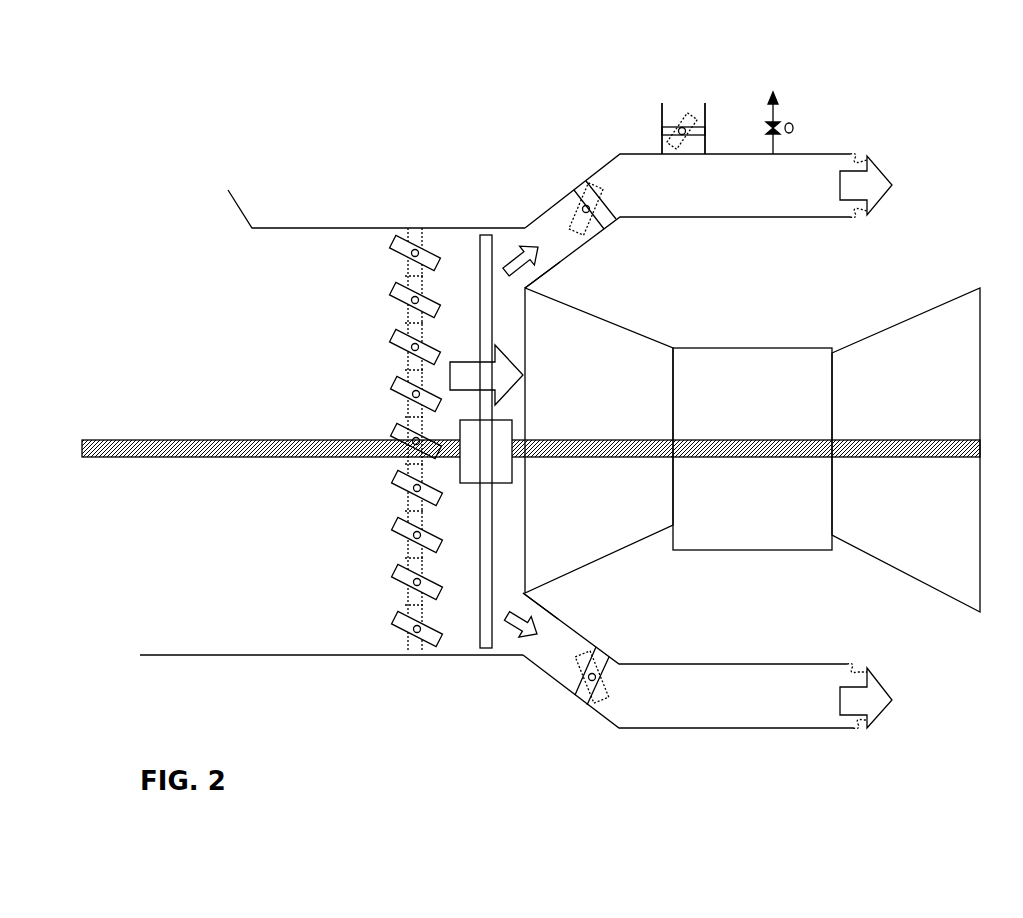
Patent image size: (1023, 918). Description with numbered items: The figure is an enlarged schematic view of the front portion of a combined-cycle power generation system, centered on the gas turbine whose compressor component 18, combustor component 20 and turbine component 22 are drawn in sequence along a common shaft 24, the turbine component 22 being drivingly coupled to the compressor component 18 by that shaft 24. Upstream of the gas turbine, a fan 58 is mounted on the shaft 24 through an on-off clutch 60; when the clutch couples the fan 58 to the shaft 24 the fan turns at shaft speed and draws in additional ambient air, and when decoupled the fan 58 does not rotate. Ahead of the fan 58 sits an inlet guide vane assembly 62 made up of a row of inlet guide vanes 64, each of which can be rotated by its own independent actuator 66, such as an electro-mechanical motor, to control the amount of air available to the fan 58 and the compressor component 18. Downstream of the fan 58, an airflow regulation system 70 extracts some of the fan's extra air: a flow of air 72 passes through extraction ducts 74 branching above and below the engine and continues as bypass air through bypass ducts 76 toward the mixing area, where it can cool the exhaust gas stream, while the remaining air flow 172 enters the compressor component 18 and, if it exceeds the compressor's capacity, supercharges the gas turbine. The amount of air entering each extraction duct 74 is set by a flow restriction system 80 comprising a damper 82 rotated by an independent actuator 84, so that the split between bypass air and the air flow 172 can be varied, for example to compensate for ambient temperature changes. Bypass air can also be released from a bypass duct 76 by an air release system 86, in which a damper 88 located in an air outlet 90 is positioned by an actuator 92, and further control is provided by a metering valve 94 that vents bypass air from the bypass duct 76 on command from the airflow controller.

The compressor component 18 is at (593, 403).
The combustor component 20 is at (740, 403).
The turbine component 22 is at (893, 403).
The shaft 24 is at (273, 440).
The fan 58 is at (480, 623).
The on-off clutch 60 is at (474, 460).
The inlet guide vane assembly 62 is at (379, 447).
The inlet guide vane 64 is at (398, 252).
The actuator 66 is at (417, 253).
The airflow regulation system 70 is at (500, 115).
The flow of air 72 is at (513, 258).
The extraction duct 74 is at (557, 265).
The bypass duct 76 is at (791, 193).
The flow restriction system 80 is at (606, 433).
The damper 82 is at (603, 220).
The actuator 84 is at (582, 210).
The air release system 86 is at (720, 119).
The damper 88 is at (668, 135).
The air outlet 90 is at (659, 89).
The actuator 92 is at (684, 125).
The metering valve 94 is at (777, 122).
The air flow 172 is at (466, 385).